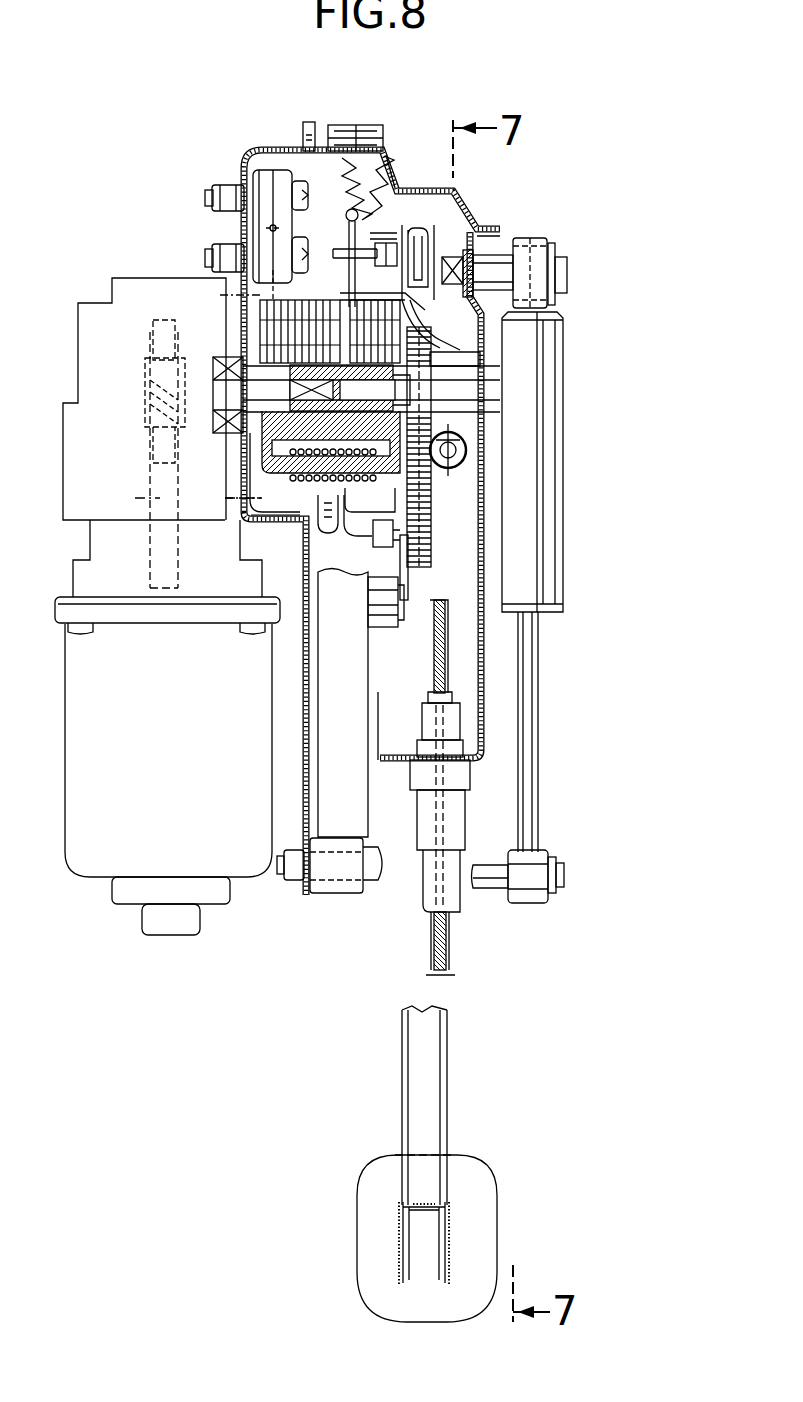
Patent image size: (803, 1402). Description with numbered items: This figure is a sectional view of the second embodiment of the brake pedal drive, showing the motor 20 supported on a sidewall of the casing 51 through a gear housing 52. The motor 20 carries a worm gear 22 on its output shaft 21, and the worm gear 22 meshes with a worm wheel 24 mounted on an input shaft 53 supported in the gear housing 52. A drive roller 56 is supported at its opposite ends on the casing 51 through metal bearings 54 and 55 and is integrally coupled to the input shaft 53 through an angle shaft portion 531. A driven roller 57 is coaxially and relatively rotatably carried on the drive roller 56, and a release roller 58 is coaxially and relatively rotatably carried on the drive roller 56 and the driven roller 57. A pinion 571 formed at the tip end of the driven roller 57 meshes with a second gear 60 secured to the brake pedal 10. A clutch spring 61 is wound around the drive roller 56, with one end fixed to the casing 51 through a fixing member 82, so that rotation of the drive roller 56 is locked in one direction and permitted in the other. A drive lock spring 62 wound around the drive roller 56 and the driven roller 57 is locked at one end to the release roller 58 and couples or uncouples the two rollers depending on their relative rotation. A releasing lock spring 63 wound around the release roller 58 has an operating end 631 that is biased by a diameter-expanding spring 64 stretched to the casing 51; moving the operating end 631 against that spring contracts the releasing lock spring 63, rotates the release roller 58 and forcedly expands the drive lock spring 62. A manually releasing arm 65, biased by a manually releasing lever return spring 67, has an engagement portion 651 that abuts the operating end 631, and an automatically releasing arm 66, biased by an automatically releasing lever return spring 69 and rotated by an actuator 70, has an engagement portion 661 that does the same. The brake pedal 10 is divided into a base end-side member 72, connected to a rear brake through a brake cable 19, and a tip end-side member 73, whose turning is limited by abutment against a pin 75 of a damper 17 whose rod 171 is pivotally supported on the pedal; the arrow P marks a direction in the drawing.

The brake pedal 10 is at (452, 1060).
The damper 17 is at (566, 532).
The rod 171 is at (540, 758).
The brake cable 19 is at (432, 950).
The motor 20 is at (165, 762).
The output shaft 21 is at (186, 500).
The worm gear 22 is at (147, 404).
The worm wheel 24 is at (152, 332).
The casing 51 is at (292, 150).
The gear housing 52 is at (146, 278).
The input shaft 53 is at (225, 380).
The angle shaft portion 531 is at (285, 482).
The metal bearing 54 is at (246, 470).
The metal bearing 55 is at (490, 373).
The drive roller 56 is at (257, 325).
The driven roller 57 is at (372, 425).
The pinion 571 is at (438, 470).
The release roller 58 is at (392, 492).
The second gear 60 is at (408, 560).
The clutch spring 61 is at (340, 296).
The drive lock spring 62 is at (282, 522).
The releasing lock spring 63 is at (346, 522).
The operating end 631 is at (347, 215).
The diameter-expanding spring 64 is at (342, 160).
The manually releasing arm 65 is at (340, 556).
The automatically releasing arm 66 is at (432, 268).
The engagement portion 661 is at (338, 252).
The engagement portion 651 is at (388, 243).
The manually releasing lever return spring 67 is at (464, 458).
The automatically releasing lever return spring 69 is at (390, 180).
The actuator 70 is at (352, 737).
The base end-side member 72 is at (434, 605).
The tip end-side member 73 is at (445, 1110).
The pin 75 is at (493, 895).
The fixing member 82 is at (264, 175).
The direction P is at (593, 395).